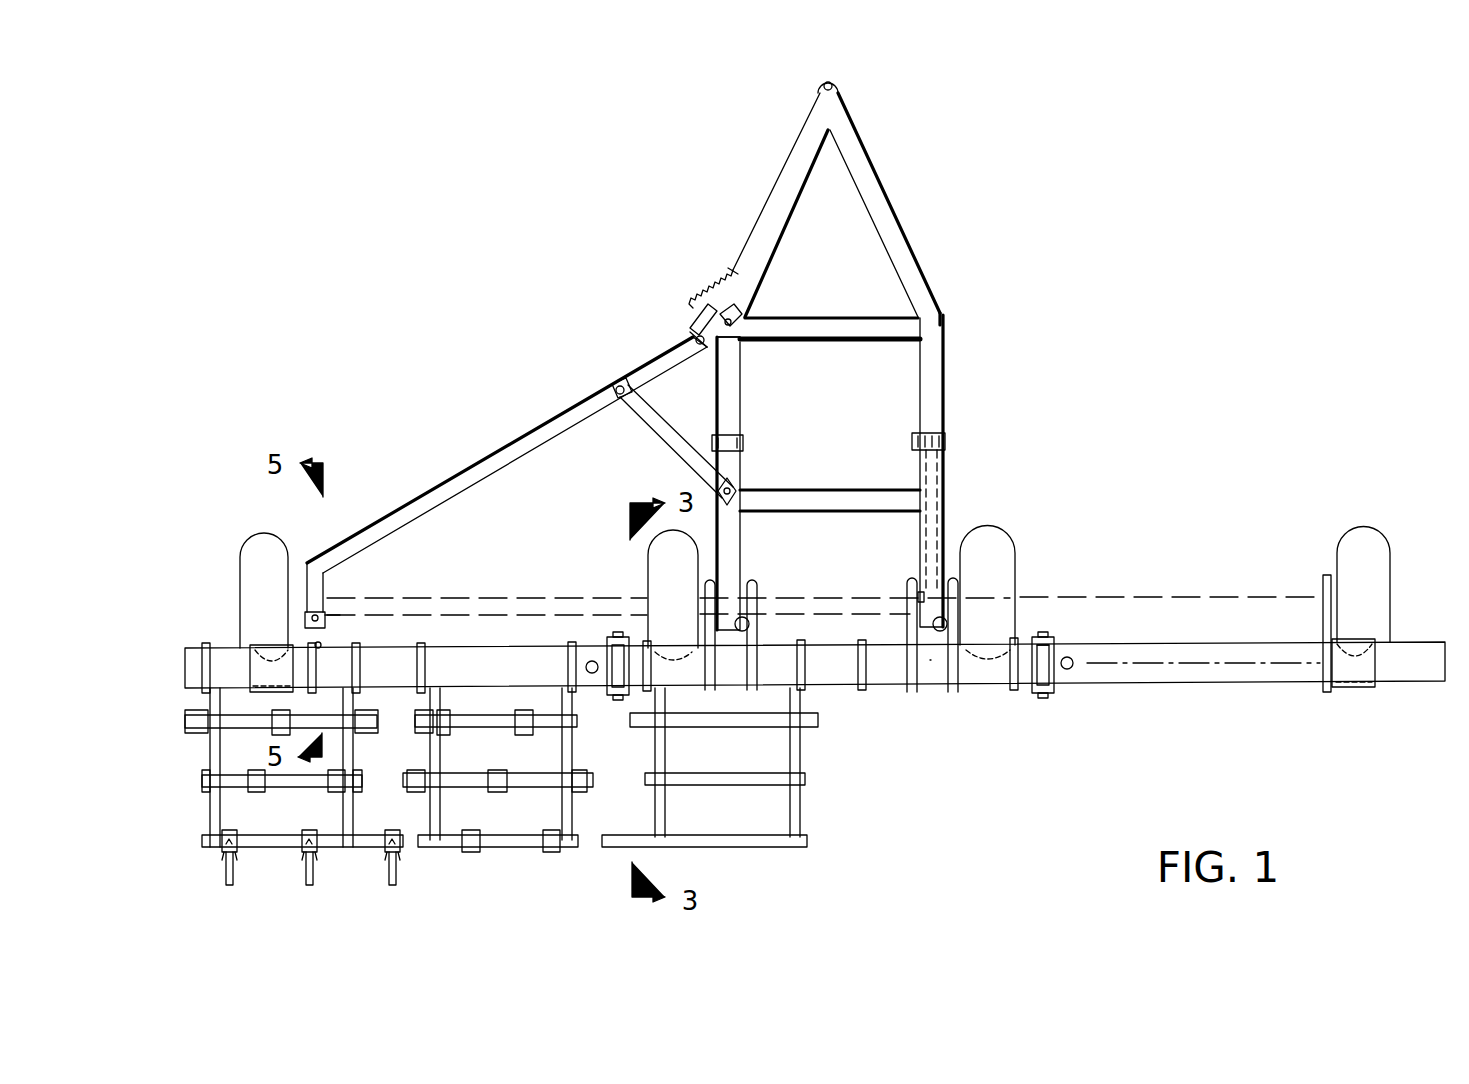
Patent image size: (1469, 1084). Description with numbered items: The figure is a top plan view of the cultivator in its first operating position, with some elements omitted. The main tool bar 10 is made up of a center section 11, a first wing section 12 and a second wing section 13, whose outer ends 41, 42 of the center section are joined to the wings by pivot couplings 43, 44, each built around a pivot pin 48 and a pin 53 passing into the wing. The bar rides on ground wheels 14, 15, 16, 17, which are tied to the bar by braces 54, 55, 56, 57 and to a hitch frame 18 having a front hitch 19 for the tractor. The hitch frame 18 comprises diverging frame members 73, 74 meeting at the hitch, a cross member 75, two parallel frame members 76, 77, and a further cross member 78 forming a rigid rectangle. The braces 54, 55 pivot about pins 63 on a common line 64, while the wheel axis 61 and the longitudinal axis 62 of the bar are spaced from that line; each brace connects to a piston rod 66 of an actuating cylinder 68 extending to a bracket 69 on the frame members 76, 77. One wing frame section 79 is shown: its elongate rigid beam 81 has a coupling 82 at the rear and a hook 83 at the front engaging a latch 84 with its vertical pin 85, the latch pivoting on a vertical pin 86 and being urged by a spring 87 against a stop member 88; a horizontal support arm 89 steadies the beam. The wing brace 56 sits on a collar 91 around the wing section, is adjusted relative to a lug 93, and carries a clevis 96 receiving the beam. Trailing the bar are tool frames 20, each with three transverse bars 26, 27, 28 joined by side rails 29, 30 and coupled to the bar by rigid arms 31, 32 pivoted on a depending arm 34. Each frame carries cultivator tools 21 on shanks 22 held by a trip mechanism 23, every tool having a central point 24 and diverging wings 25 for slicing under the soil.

The main tool bar 10 is at (917, 700).
The center section 11 is at (848, 690).
The first wing section 12 is at (520, 645).
The second wing section 13 is at (1240, 688).
The ground wheel 14 is at (645, 585).
The ground wheel 15 is at (1010, 535).
The ground wheel 16 is at (250, 535).
The ground wheel 17 is at (1358, 530).
The hitch frame 18 is at (950, 358).
The front hitch 19 is at (818, 86).
The tool frame 20 is at (528, 765).
The cultivator tool 21 is at (240, 850).
The shank 22 is at (237, 870).
The trip mechanism 23 is at (233, 832).
The central point 24 is at (392, 828).
The diverging wings 25 is at (405, 870).
The transverse bar 26 is at (788, 847).
The transverse bar 27 is at (808, 778).
The transverse bar 28 is at (815, 725).
The side rail 29 is at (655, 820).
The side rail 30 is at (805, 810).
The rigid arm 31 is at (440, 690).
The rigid arm 32 is at (555, 700).
The depending arm 34 is at (420, 660).
The outer end 41 is at (648, 650).
The outer end 42 is at (1028, 690).
The pivot coupling 43 is at (608, 705).
The pivot coupling 44 is at (1050, 705).
The pivot pin 48 is at (1050, 640).
The pin 53 is at (1070, 670).
The brace 54 is at (708, 582).
The brace 55 is at (906, 592).
The brace 56 is at (329, 558).
The brace 57 is at (1322, 585).
The axis 61 is at (490, 595).
The longitudinal axis 62 is at (1220, 660).
The pin 63 is at (748, 624).
The common line 64 is at (858, 632).
The piston rod 66 is at (918, 592).
The actuating cylinder 68 is at (935, 462).
The bracket 69 is at (745, 440).
The frame member 73 is at (795, 158).
The frame member 74 is at (885, 202).
The cross member 75 is at (870, 342).
The frame member 76 is at (740, 393).
The frame member 77 is at (943, 395).
The cross member 78 is at (820, 510).
The wing frame section 79 is at (548, 400).
The elongate rigid beam 81 is at (490, 458).
The coupling 82 is at (330, 595).
The hook 83 is at (690, 338).
The latch 84 is at (742, 352).
The vertical pin 85 is at (720, 370).
The vertical pin 86 is at (740, 312).
The spring 87 is at (705, 292).
The stop member 88 is at (742, 296).
The support arm 89 is at (655, 438).
The collar 91 is at (250, 675).
The lug 93 is at (325, 645).
The clevis 96 is at (335, 610).